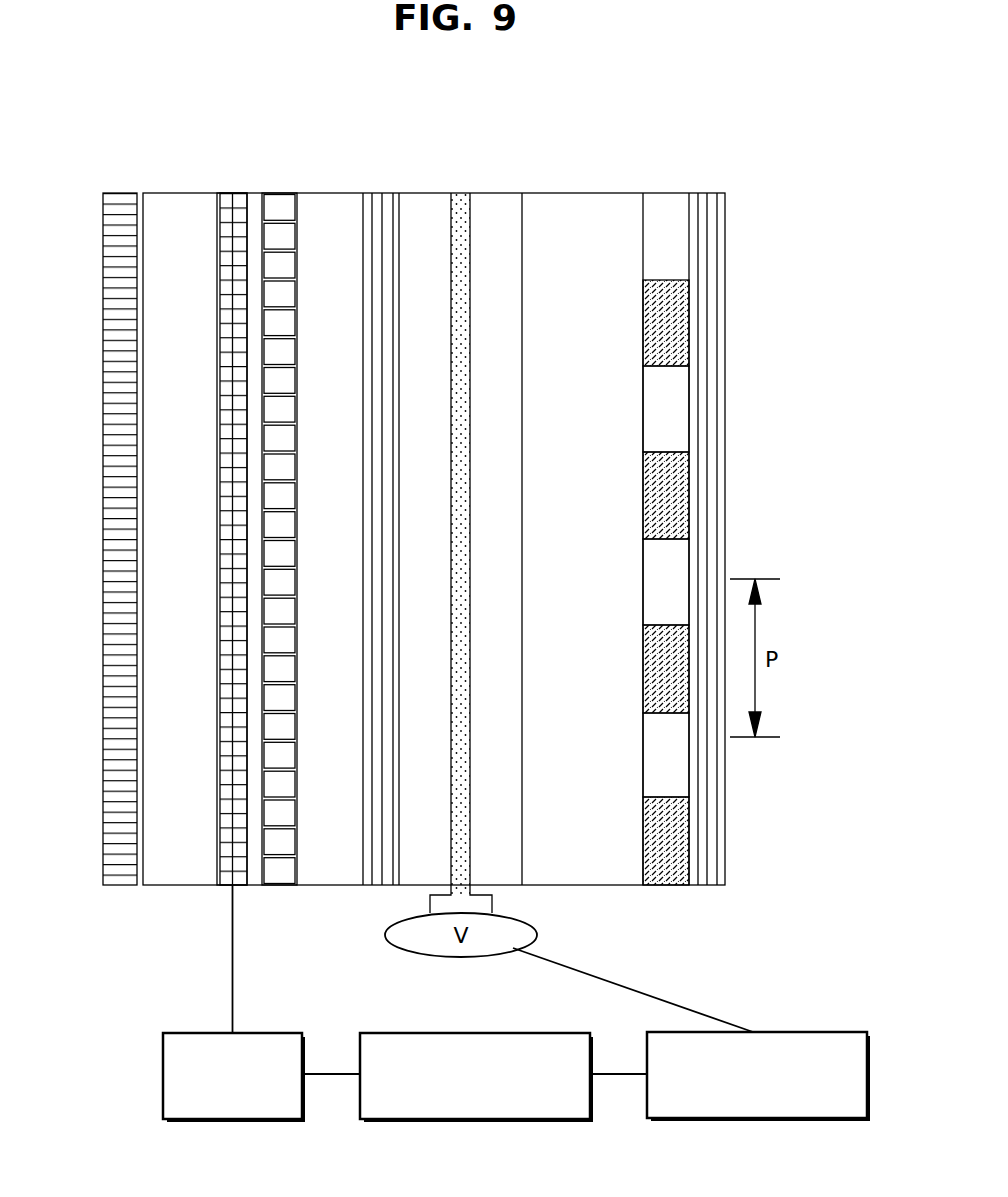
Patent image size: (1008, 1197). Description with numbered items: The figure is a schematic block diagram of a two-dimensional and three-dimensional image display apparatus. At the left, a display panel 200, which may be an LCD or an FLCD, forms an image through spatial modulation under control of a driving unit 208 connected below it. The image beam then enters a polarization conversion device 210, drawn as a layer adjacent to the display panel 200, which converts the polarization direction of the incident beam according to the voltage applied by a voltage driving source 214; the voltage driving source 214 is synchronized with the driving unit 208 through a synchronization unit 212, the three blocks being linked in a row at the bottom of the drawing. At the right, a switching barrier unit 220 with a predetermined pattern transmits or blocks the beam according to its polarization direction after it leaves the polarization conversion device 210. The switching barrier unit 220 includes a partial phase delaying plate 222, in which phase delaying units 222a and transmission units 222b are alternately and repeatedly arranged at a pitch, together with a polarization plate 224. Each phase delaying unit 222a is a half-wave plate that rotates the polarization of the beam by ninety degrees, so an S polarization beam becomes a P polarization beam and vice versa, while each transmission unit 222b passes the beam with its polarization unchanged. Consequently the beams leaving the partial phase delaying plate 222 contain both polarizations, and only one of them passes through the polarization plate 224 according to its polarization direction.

The display panel 200 is at (399, 190).
The driving unit 208 is at (232, 1121).
The polarization conversion device 210 is at (399, 190).
The synchronization unit 212 is at (475, 1121).
The voltage driving source 214 is at (757, 1120).
The switching barrier unit 220 is at (767, 508).
The partial phase delaying plate 222 is at (767, 582).
The phase delaying unit 222a is at (677, 483).
The transmission unit 222b is at (677, 402).
The polarization plate 224 is at (719, 312).